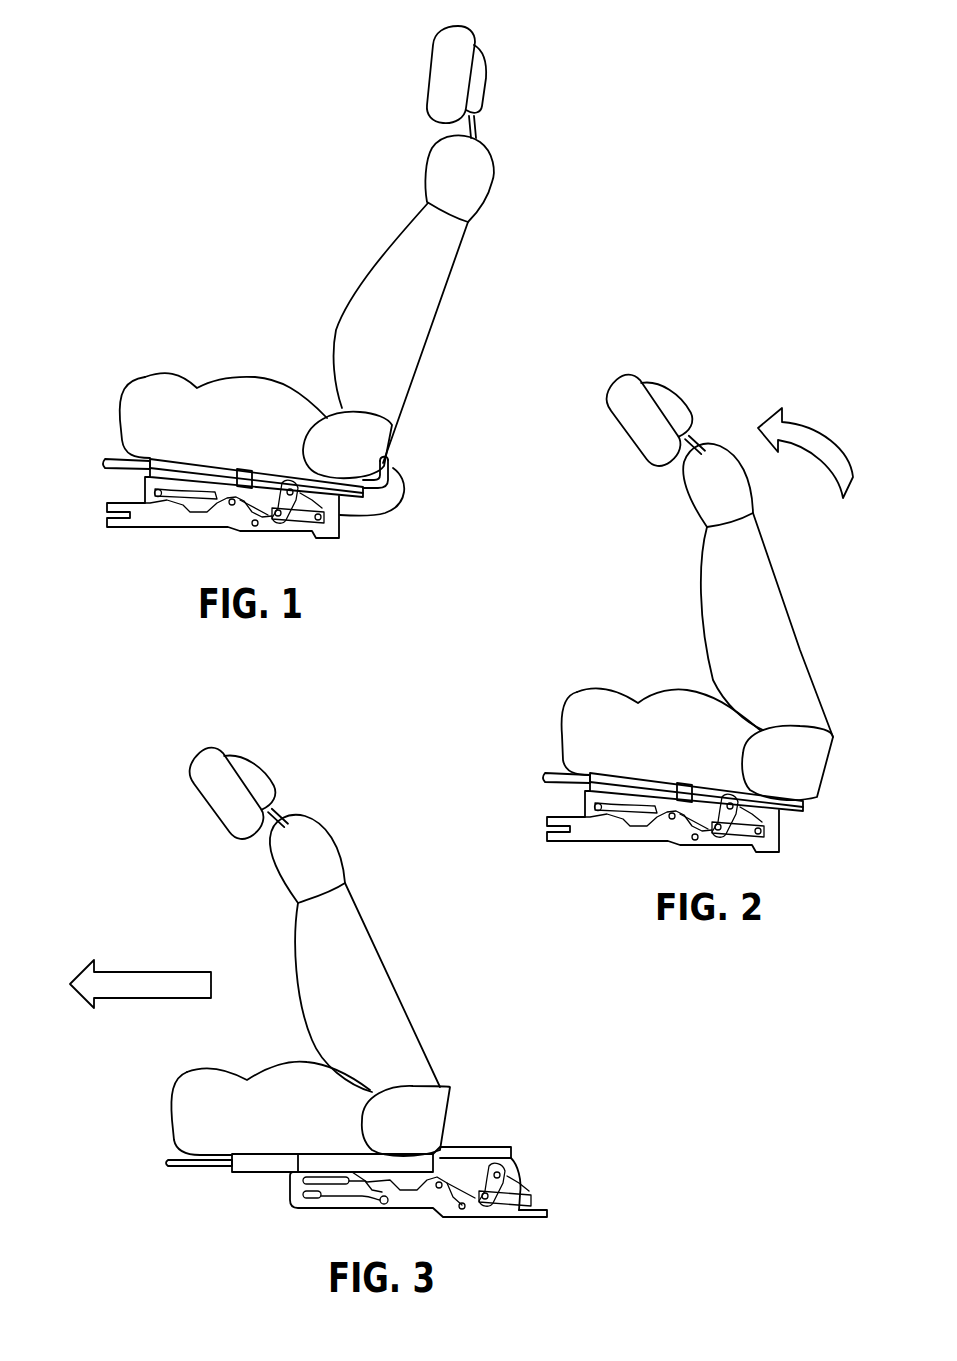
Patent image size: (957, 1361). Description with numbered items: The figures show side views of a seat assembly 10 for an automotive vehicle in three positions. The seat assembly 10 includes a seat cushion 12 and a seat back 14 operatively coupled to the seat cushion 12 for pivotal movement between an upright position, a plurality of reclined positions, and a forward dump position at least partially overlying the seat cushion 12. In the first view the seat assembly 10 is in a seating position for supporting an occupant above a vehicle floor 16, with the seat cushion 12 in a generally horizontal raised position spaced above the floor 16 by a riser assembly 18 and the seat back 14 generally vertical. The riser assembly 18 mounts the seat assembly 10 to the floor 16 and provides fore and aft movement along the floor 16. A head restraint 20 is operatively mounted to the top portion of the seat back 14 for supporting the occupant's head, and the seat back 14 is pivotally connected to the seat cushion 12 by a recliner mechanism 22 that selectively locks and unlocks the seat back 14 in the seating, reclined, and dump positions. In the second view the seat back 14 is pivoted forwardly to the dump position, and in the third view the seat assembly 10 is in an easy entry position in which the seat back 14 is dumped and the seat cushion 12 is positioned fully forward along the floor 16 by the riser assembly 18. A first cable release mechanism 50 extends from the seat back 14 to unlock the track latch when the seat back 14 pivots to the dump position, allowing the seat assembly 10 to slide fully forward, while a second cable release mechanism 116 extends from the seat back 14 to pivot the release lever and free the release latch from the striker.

In FIG. 1, the seat assembly 10 is at (203, 172).
In FIG. 2, the seat assembly 10 is at (555, 530).
In FIG. 3, the seat assembly 10 is at (125, 893).
In FIG. 1, the seat cushion 12 is at (128, 381).
In FIG. 2, the seat cushion 12 is at (596, 688).
In FIG. 3, the seat cushion 12 is at (190, 1070).
In FIG. 1, the seat back 14 is at (437, 313).
In FIG. 2, the seat back 14 is at (790, 616).
In FIG. 3, the seat back 14 is at (393, 980).
In FIG. 1, the vehicle floor 16 is at (150, 526).
In FIG. 2, the vehicle floor 16 is at (590, 845).
In FIG. 3, the vehicle floor 16 is at (535, 1220).
In FIG. 1, the riser assembly 18 is at (343, 522).
In FIG. 2, the riser assembly 18 is at (785, 836).
In FIG. 3, the riser assembly 18 is at (523, 1168).
In FIG. 1, the head restraint 20 is at (427, 82).
In FIG. 2, the head restraint 20 is at (615, 418).
In FIG. 3, the head restraint 20 is at (200, 805).
In FIG. 1, the recliner mechanism 22 is at (357, 440).
In FIG. 2, the recliner mechanism 22 is at (800, 767).
In FIG. 3, the recliner mechanism 22 is at (420, 1120).
In FIG. 1, the first cable release mechanism 50 is at (392, 468).
In FIG. 1, the second cable release mechanism 116 is at (392, 483).